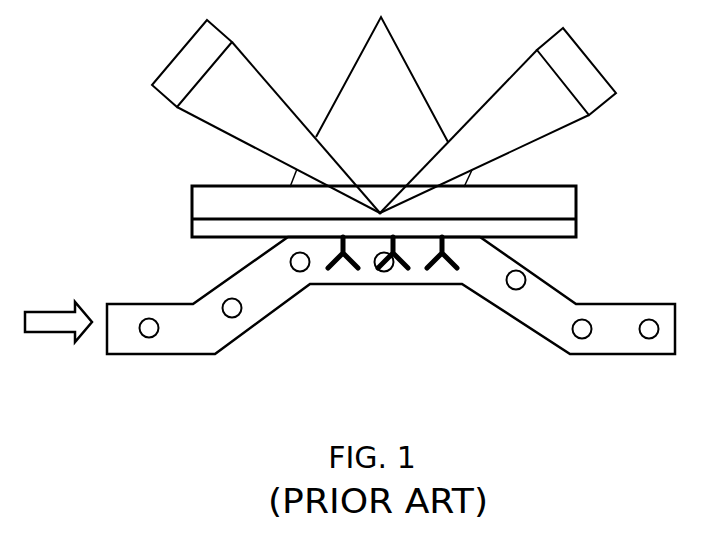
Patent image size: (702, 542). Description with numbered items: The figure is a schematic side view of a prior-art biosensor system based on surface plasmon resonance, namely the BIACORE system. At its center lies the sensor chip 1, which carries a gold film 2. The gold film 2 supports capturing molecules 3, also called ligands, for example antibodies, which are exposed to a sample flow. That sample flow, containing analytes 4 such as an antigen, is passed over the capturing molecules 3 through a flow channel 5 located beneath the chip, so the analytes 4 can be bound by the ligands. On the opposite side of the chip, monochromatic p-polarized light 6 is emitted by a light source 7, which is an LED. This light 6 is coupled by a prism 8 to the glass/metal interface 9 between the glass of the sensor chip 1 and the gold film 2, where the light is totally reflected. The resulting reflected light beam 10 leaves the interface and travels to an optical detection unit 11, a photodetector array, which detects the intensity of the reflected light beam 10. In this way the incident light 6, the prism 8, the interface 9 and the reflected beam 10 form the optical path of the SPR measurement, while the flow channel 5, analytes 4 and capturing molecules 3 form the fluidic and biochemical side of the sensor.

The sensor chip 1 is at (186, 203).
The gold film 2 is at (194, 229).
The capturing molecules 3 is at (352, 272).
The analytes 4 is at (149, 338).
The flow channel 5 is at (123, 305).
The monochromatic p-polarized light 6 is at (254, 72).
The light source 7 is at (182, 60).
The prism 8 is at (400, 70).
The glass/metal interface 9 is at (381, 212).
The reflected light beam 10 is at (518, 85).
The optical detection unit 11 is at (588, 68).